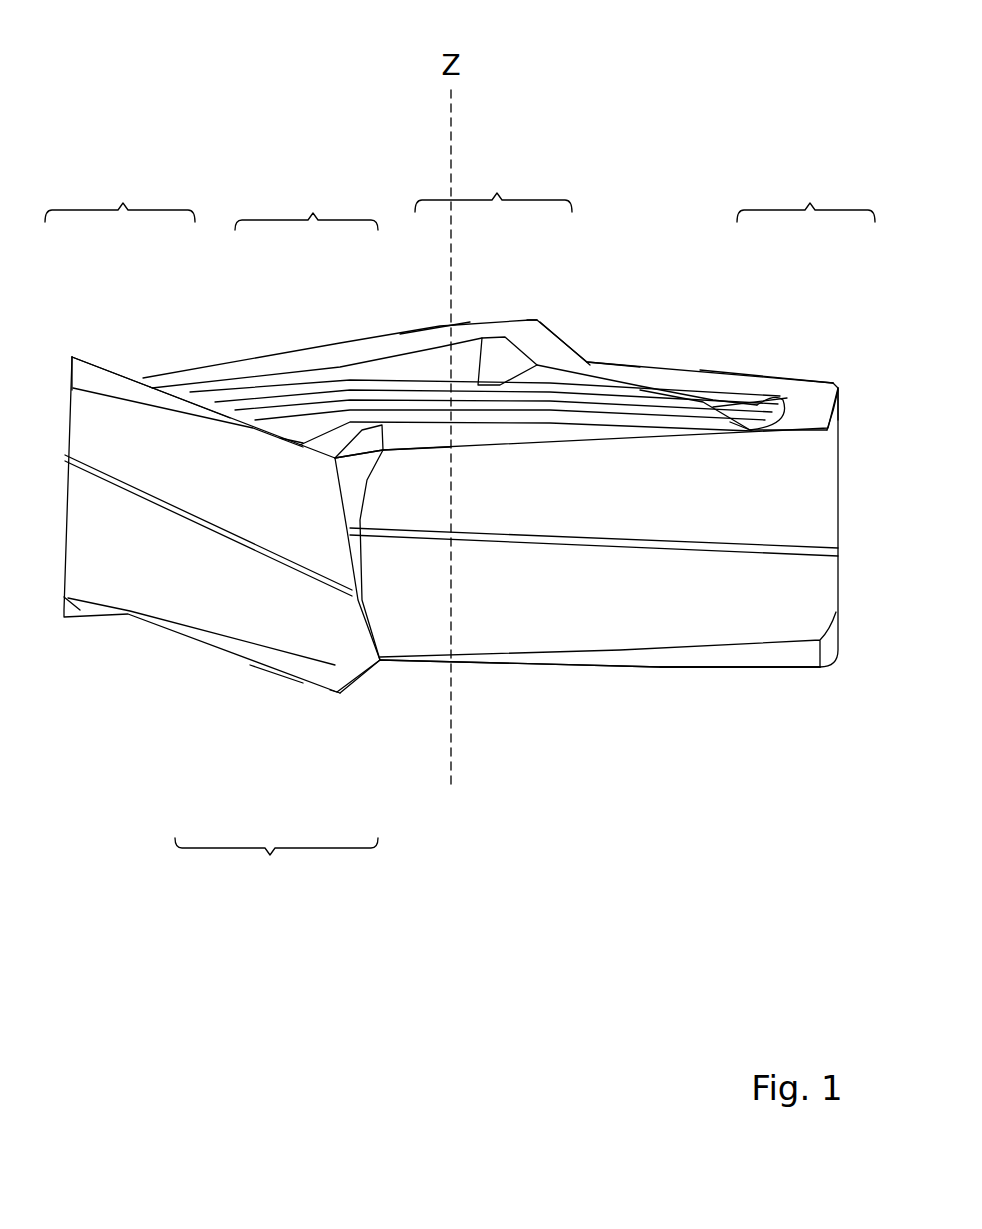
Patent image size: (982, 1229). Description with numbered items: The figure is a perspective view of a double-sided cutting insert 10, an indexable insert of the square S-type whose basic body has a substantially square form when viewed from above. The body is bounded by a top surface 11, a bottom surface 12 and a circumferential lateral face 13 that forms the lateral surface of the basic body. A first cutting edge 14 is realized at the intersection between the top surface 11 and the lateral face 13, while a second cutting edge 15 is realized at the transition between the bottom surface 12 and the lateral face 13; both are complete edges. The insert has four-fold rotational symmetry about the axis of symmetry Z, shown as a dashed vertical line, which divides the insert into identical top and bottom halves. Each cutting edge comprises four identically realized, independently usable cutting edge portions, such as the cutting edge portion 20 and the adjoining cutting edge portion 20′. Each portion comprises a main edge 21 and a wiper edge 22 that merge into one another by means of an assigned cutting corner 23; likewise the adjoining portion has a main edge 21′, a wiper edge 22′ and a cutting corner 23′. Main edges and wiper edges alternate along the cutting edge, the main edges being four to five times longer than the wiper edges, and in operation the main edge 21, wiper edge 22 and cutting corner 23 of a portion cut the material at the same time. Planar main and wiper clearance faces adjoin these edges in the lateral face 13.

The double-sided cutting insert 10 is at (217, 85).
The top surface 11 is at (719, 161).
The bottom surface 12 is at (734, 835).
The circumferential lateral face 13 is at (791, 481).
The first cutting edge 14 is at (691, 355).
The second cutting edge 15 is at (658, 677).
The cutting edge portion 20 is at (806, 188).
The main edge 21 is at (757, 363).
The wiper edge 22 is at (758, 424).
The cutting corner 23 is at (842, 378).
The cutting edge portion 20′ is at (493, 175).
The main edge 21′ is at (437, 314).
The wiper edge 22′ is at (612, 343).
The cutting corner 23′ is at (530, 304).